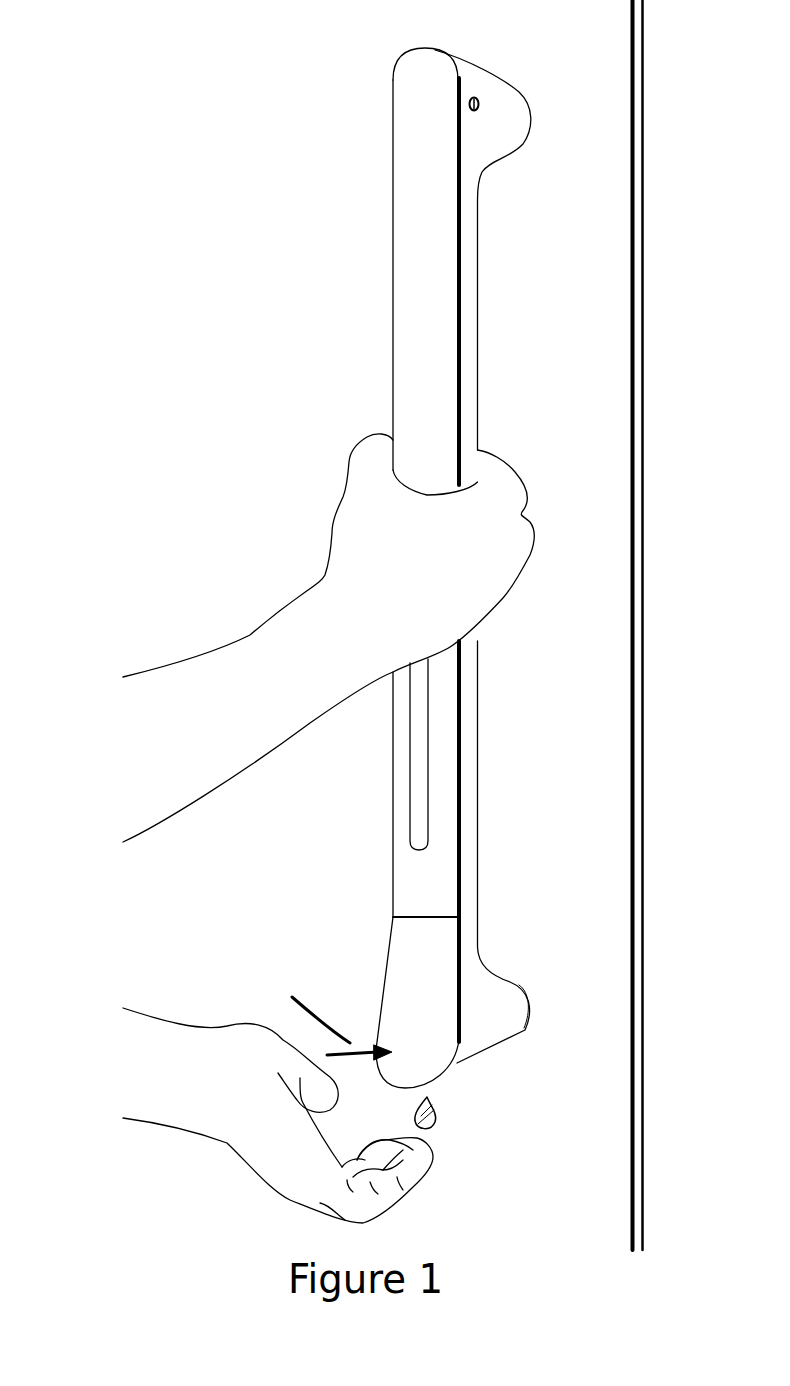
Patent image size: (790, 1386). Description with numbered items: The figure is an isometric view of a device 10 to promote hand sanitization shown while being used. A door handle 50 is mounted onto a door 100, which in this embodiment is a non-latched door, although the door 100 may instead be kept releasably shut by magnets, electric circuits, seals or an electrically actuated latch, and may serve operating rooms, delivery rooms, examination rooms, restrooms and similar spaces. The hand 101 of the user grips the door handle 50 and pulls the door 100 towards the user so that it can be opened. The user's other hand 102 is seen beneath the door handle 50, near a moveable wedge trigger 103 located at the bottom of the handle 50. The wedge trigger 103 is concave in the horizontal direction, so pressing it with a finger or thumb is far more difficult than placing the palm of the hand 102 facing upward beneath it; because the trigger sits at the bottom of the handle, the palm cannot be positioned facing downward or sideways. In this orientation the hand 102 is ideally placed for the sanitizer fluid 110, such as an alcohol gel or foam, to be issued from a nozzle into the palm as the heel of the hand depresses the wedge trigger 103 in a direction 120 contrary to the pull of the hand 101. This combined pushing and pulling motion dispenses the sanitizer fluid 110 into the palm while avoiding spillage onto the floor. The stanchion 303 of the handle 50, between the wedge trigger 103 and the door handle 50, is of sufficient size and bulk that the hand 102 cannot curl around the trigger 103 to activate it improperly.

The device to promote hand sanitization 10 is at (318, 337).
The door handle 50 is at (407, 256).
The door 100 is at (518, 256).
The hand 101 is at (357, 531).
The other hand 102 is at (317, 1190).
The moveable wedge trigger 103 is at (407, 957).
The sanitizer fluid 110 is at (432, 1118).
The direction 120 is at (327, 1013).
The stanchion 303 is at (485, 1013).